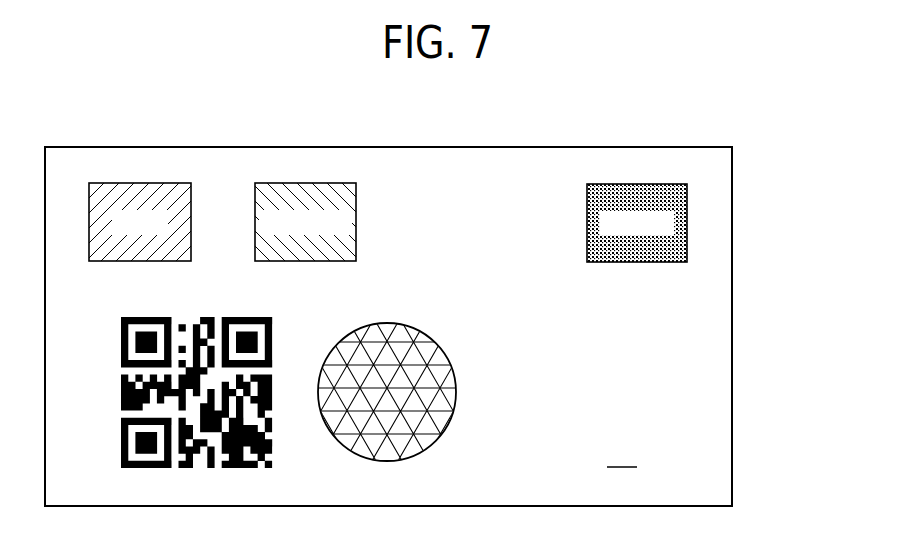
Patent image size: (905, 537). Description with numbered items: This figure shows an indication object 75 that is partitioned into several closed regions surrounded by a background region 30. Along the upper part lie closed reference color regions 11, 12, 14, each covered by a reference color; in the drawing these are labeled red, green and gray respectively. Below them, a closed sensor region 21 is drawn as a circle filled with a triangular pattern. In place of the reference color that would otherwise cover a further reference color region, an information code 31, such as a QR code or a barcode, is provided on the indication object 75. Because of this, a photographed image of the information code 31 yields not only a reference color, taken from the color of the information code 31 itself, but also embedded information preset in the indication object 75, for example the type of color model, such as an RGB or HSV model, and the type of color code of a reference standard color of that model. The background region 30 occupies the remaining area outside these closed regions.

The indication object 75 is at (745, 167).
The reference color region 11 is at (138, 261).
The reference color region 12 is at (305, 261).
The reference color region 14 is at (643, 262).
The sensor region 21 is at (447, 422).
The information code 31 is at (271, 433).
The background region 30 is at (622, 454).